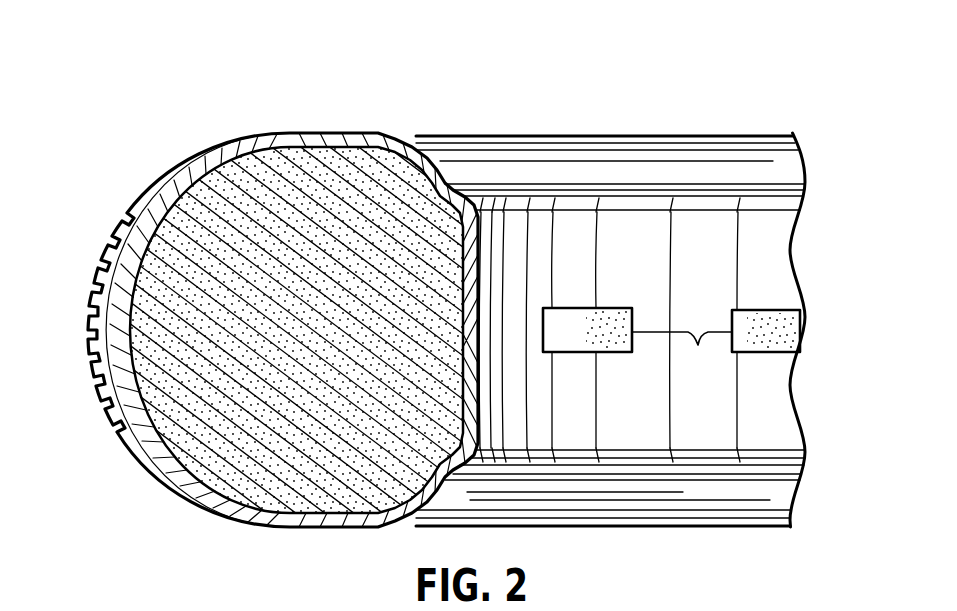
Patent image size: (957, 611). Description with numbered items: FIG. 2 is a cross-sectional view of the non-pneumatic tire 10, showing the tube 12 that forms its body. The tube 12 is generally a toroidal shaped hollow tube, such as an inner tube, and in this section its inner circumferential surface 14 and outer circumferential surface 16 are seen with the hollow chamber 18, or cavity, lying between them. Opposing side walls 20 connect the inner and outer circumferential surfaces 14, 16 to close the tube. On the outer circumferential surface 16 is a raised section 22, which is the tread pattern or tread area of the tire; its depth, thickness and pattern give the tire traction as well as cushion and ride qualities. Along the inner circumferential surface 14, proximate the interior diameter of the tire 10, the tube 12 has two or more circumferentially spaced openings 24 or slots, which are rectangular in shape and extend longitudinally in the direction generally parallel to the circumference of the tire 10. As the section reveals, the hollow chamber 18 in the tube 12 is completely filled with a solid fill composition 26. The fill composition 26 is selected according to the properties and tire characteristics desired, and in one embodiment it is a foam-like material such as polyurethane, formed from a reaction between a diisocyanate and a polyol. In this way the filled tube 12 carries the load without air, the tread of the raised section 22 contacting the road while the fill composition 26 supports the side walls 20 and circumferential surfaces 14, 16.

The tire 10 is at (190, 96).
The tube 12 is at (632, 324).
The inner circumferential surface 14 is at (648, 412).
The outer circumferential surface 16 is at (250, 326).
The hollow chamber 18 is at (312, 152).
The side walls 20 is at (493, 140).
The raised section 22 is at (90, 347).
The openings 24 is at (682, 358).
The fill composition 26 is at (340, 338).